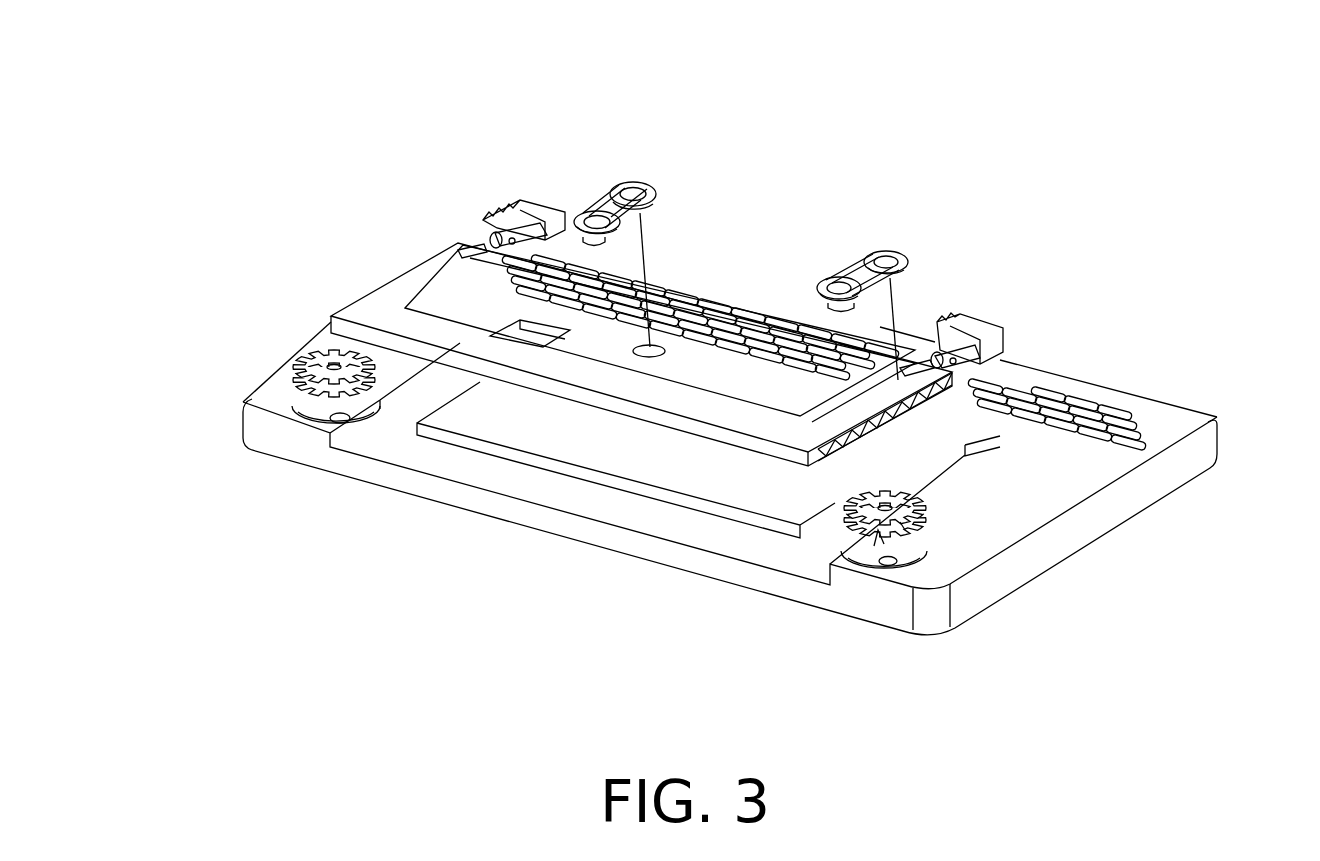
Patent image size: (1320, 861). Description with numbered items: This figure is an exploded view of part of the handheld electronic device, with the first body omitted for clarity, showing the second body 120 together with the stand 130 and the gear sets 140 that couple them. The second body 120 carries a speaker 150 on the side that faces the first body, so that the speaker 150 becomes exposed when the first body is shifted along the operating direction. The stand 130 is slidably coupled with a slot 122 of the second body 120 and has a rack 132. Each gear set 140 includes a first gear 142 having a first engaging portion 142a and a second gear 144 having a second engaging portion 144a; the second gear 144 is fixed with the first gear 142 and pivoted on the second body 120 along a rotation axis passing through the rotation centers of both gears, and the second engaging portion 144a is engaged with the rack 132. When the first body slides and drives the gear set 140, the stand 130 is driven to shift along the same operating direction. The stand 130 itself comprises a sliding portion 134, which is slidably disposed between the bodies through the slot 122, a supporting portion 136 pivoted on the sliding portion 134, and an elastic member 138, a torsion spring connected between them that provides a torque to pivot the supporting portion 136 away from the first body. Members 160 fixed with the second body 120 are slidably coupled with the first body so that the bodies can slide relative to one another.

The second body 120 is at (1212, 448).
The slot 122 is at (978, 470).
The stand 130 is at (295, 328).
The rack 132 is at (833, 463).
The sliding portion 134 is at (970, 327).
The supporting portion 136 is at (355, 317).
The elastic member 138 is at (830, 443).
The gear set 140 is at (119, 355).
The first gear 142 is at (313, 354).
The first engaging portion 142a is at (905, 522).
The second gear 144 is at (292, 413).
The second engaging portion 144a is at (875, 530).
The speaker 150 is at (1117, 400).
The member 160 is at (883, 247).